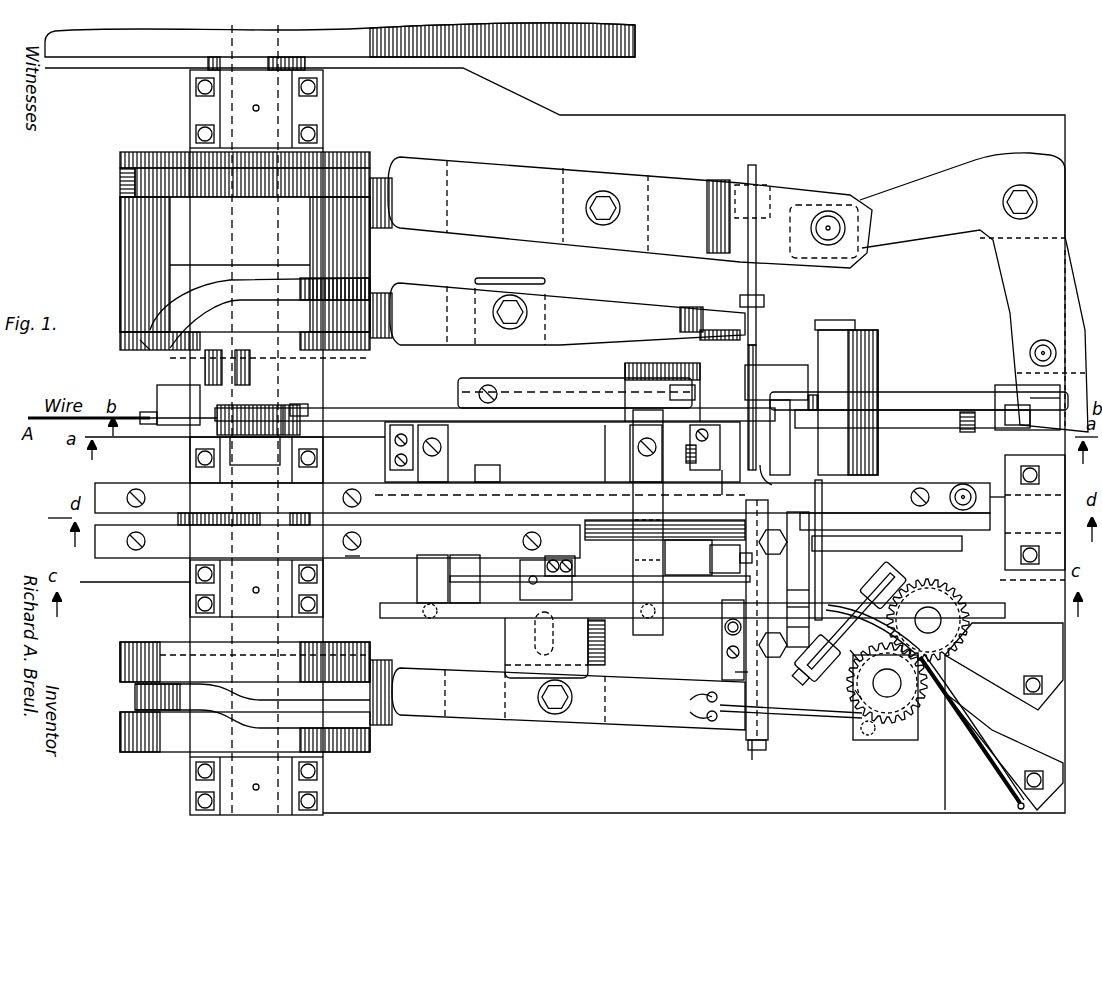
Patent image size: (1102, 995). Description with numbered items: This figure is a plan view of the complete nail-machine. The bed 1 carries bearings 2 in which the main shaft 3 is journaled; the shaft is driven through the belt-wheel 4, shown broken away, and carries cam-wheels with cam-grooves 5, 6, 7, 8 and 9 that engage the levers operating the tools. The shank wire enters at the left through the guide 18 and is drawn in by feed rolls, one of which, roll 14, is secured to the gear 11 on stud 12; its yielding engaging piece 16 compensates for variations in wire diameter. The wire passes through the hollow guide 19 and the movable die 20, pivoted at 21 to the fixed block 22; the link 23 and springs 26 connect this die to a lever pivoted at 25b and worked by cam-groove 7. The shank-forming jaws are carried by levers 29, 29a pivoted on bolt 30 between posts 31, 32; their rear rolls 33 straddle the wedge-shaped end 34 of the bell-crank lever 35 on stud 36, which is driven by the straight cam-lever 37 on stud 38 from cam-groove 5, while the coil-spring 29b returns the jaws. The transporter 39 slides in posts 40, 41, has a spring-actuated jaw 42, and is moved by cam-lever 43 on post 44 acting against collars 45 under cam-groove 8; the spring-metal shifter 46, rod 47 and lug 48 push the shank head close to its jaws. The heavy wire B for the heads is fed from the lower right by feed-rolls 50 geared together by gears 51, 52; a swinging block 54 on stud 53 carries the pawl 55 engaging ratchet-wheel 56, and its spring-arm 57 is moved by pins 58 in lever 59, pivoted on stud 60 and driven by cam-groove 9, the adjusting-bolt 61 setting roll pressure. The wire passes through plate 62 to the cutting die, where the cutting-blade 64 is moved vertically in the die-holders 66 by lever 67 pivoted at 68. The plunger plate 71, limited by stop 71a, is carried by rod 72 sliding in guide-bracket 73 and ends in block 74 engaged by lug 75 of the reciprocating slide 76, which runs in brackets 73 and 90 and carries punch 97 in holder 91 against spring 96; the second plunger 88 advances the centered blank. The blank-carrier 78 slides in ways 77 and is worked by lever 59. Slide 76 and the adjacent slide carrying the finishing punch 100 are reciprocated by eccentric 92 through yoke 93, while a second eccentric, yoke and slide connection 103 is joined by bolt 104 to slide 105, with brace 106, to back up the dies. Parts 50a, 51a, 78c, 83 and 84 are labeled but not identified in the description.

The bed 1 is at (555, 440).
The bearings 2 is at (256, 436).
The shaft 3 is at (260, 313).
The belt-wheel 4 is at (637, 42).
The cam-groove 5 is at (122, 186).
The cam-groove 6 is at (135, 346).
The cam-groove 7 is at (182, 366).
The cam-groove 8 is at (173, 652).
The cam-groove 9 is at (135, 692).
The gear 11 is at (255, 420).
The stud 12 is at (255, 451).
The wire-feed roll 14 is at (283, 405).
The engaging piece 16 is at (300, 410).
The guide 18 is at (170, 405).
The hollow channel or guide 19 is at (495, 414).
The movable die 20 is at (716, 442).
The pivot 21 is at (731, 485).
The fixed block 22 is at (700, 440).
The link 23 is at (694, 392).
The pivot 25b is at (773, 396).
The springs 26 is at (575, 391).
The lever 29 is at (912, 421).
The lever 29a is at (919, 397).
The coil-spring 29b is at (962, 432).
The bolt 30 is at (824, 403).
The post 31 is at (772, 440).
The post 32 is at (846, 397).
The engaging rolls 33 is at (1012, 428).
The wedge-shaped end 34 is at (1027, 398).
The bell-crank lever 35 is at (974, 292).
The stud 36 is at (1020, 196).
The straight cam-lever 37 is at (621, 212).
The stud 38 is at (612, 192).
The transporter 39 is at (758, 280).
The post 40 is at (768, 193).
The post 41 is at (712, 375).
The spring-actuated jaw 42 is at (557, 314).
The cam-lever 43 is at (532, 293).
The post 44 is at (528, 295).
The collars 45 is at (766, 302).
The shifter 46 is at (781, 482).
The rod 47 is at (595, 480).
The lug 48 is at (494, 467).
The feed-rolls 50 is at (868, 690).
The guide arc 50a is at (955, 598).
The gear 51 is at (920, 679).
The arm 51a is at (1004, 666).
The gear 52 is at (963, 622).
The stud 53 is at (887, 683).
The swinging block 54 is at (885, 735).
The spring-actuated pawl 55 is at (905, 728).
The ratchet-wheel 56 is at (865, 670).
The spring-arm 57 is at (816, 716).
The pins 58 is at (690, 706).
The lever 59 is at (557, 695).
The stud 60 is at (553, 712).
The adjusting-bolt 61 is at (862, 600).
The plate 62 is at (797, 636).
The cutting-blade 64 is at (797, 617).
The die-holders 66 is at (767, 620).
The lever 67 is at (692, 611).
The pivot 68 is at (545, 614).
The plate 71 is at (797, 579).
The stop 71a is at (798, 595).
The rod 72 is at (618, 580).
The guide-bracket 73 is at (648, 522).
The block 74 is at (522, 570).
The lug 75 is at (562, 558).
The reciprocating slide 76 is at (465, 579).
The ways 77 is at (762, 742).
The blank-carrier 78 is at (737, 761).
The nut 78c is at (775, 601).
The screw post 83 is at (734, 639).
The pin 84 is at (735, 672).
The second plunger 88 is at (812, 562).
The bracket 90 is at (432, 579).
The holder 91 is at (724, 558).
The eccentric 92 is at (337, 541).
The yoke 93 is at (352, 556).
The spring 96 is at (688, 557).
The centering and shaping punch 97 is at (773, 532).
The movable punch 100 is at (732, 518).
The eccentric, yoke and slide connection 103 is at (542, 496).
The bolt 104 is at (910, 522).
The slide 105 is at (895, 524).
The brace 106 is at (887, 543).
The wire B is at (993, 734).